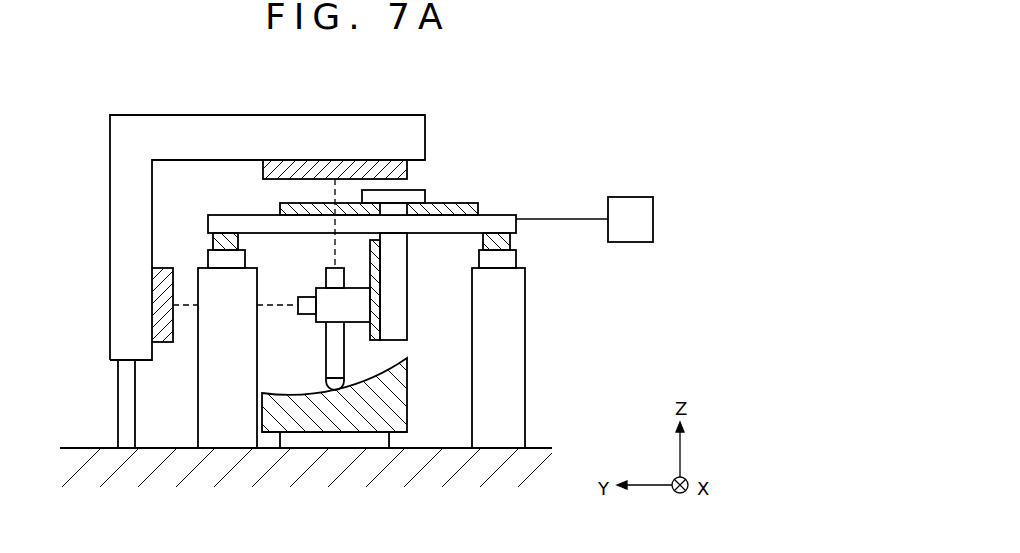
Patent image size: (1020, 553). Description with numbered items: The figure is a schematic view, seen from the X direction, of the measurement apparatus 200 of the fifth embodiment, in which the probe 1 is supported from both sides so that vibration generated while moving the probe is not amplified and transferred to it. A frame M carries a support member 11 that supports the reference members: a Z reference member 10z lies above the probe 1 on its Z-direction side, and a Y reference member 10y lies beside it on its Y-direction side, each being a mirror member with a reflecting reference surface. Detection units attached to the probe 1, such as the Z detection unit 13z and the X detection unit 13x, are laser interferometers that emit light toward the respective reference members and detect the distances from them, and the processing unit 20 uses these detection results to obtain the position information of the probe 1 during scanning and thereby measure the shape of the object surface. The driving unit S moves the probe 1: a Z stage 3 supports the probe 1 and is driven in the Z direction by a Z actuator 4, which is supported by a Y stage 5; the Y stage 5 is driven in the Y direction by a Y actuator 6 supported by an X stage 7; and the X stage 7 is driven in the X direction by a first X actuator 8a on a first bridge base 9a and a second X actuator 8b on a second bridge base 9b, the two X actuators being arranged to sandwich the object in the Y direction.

The measurement apparatus 200 is at (605, 92).
The frame M is at (83, 115).
The driving unit S is at (548, 185).
The support member 11 is at (412, 115).
The Z reference member 10z is at (323, 165).
The Y reference member 10y is at (160, 296).
The X stage 7 is at (503, 215).
The Y actuator 6 is at (457, 203).
The Y stage 5 is at (420, 190).
The first X actuator 8a is at (510, 242).
The second X actuator 8b is at (213, 242).
The first bridge base 9a is at (516, 260).
The second bridge base 9b is at (208, 262).
The processing unit 20 is at (653, 207).
The Z actuator 4 is at (380, 291).
The Z detection unit 13z is at (330, 269).
The X detection unit 13x is at (310, 298).
The Z stage 3 is at (358, 323).
The probe 1 is at (326, 350).